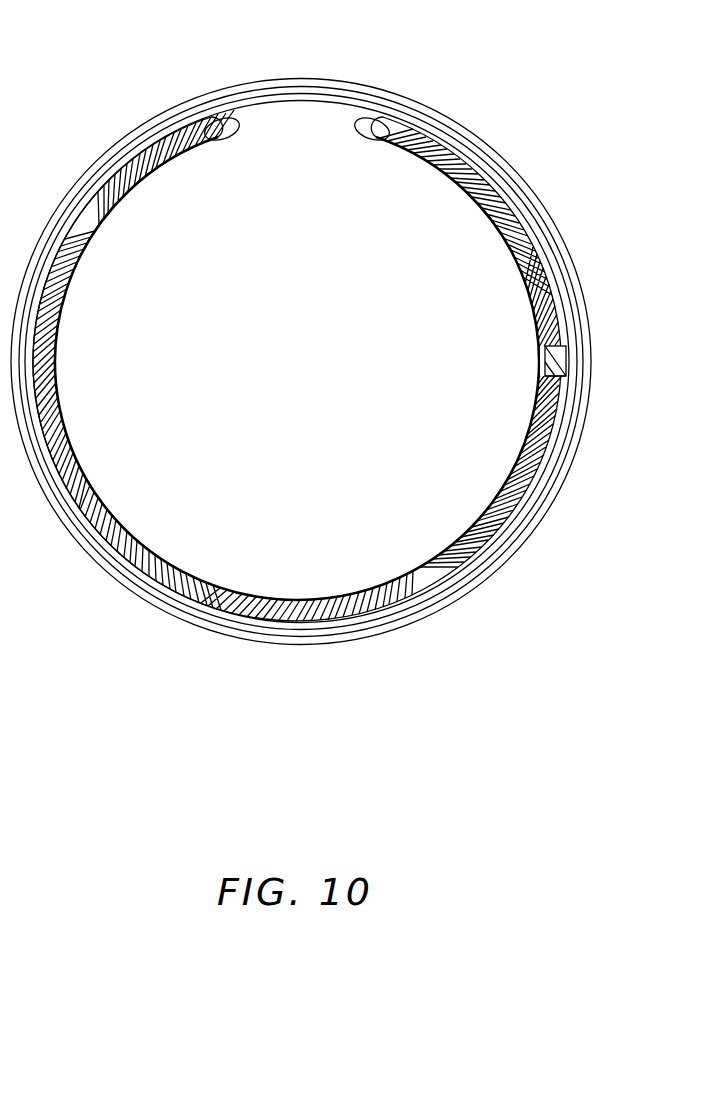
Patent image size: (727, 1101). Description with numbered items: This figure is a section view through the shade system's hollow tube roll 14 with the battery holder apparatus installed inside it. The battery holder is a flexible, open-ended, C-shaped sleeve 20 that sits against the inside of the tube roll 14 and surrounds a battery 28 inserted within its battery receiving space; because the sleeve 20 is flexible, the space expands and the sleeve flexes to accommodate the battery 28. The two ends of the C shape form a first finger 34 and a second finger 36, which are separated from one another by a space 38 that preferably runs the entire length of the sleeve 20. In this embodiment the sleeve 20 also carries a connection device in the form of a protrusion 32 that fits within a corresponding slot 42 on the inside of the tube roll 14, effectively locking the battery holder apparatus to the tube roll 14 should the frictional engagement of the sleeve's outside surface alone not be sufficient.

The tube roll 14 is at (582, 330).
The sleeve 20 is at (180, 597).
The battery 28 is at (410, 220).
The protrusion 32 is at (570, 378).
The first finger 34 is at (196, 130).
The second finger 36 is at (392, 124).
The space 38 is at (298, 110).
The slot 42 is at (585, 360).